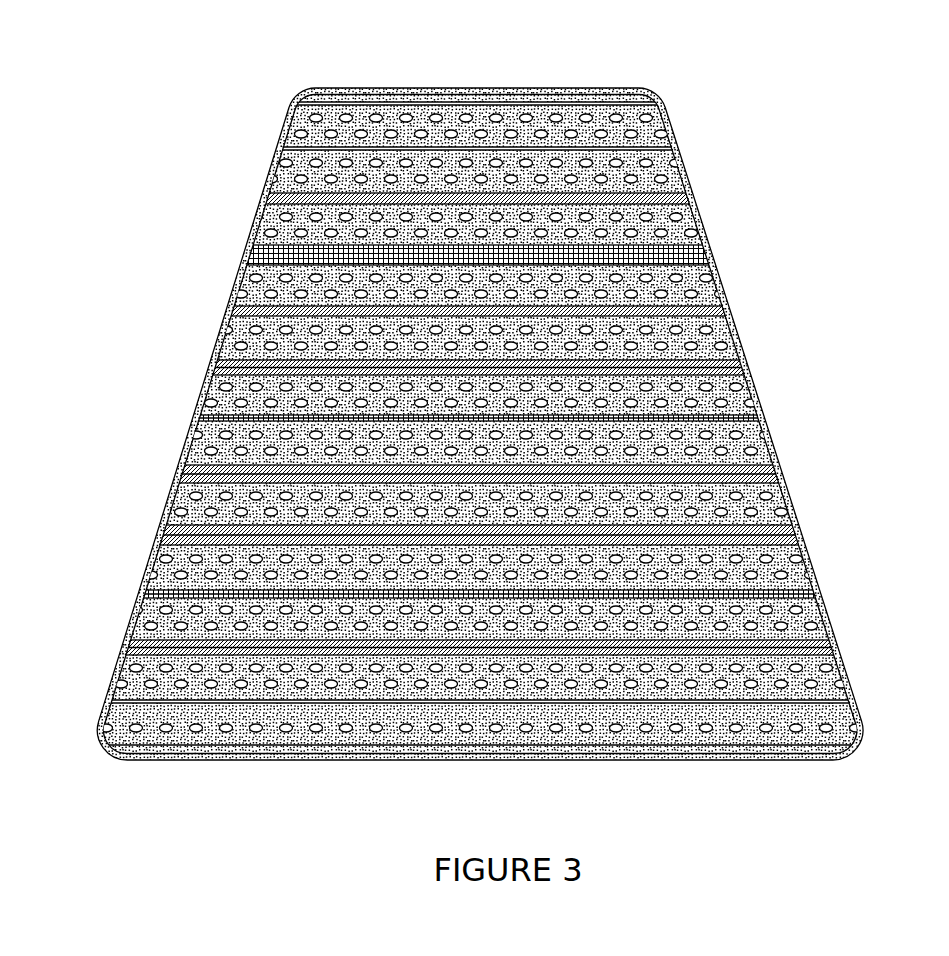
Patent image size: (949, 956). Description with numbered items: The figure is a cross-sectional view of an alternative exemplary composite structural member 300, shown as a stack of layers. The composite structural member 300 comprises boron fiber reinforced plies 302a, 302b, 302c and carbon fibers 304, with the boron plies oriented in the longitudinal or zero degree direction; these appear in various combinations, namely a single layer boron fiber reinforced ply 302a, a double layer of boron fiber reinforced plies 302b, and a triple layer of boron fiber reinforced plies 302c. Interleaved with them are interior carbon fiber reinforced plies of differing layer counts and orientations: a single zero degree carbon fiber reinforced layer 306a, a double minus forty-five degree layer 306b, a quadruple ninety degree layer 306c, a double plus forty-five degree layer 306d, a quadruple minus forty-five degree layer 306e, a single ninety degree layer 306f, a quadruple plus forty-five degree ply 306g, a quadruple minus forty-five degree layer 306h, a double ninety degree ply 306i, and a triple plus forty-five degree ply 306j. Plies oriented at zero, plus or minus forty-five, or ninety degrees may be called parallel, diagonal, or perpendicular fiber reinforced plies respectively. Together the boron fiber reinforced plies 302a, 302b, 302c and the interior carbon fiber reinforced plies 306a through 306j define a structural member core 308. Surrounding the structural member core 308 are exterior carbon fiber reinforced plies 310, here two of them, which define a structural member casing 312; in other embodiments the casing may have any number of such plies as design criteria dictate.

The composite structural member 300 is at (478, 48).
The single layer boron fiber reinforced ply 302a is at (672, 216).
The double layer of boron fiber reinforced plies 302b is at (305, 118).
The triple layer of boron fiber reinforced plies 302c is at (643, 168).
The carbon fibers 304 is at (624, 102).
The single 0° carbon fiber reinforced layer 306a is at (655, 133).
The double −45° carbon fiber reinforced layer 306b is at (267, 195).
The quadruple 90° carbon fiber reinforced layer 306c is at (687, 252).
The double +45° carbon fiber reinforced layer 306d is at (234, 300).
The quadruple −45° carbon fiber reinforced layer 306e is at (734, 358).
The single 90° carbon fiber reinforced layer 306f is at (198, 410).
The quadruple +45° carbon fiber reinforced ply 306g is at (761, 466).
The quadruple −45° carbon fiber reinforced layer 306h is at (171, 521).
The double 90° carbon fiber reinforced ply 306i is at (802, 584).
The triple +45° carbon fiber reinforced ply 306j is at (129, 640).
The structural member core 308 is at (379, 712).
The exterior carbon fiber reinforced plies 310 is at (620, 748).
The structural member casing 312 is at (724, 768).